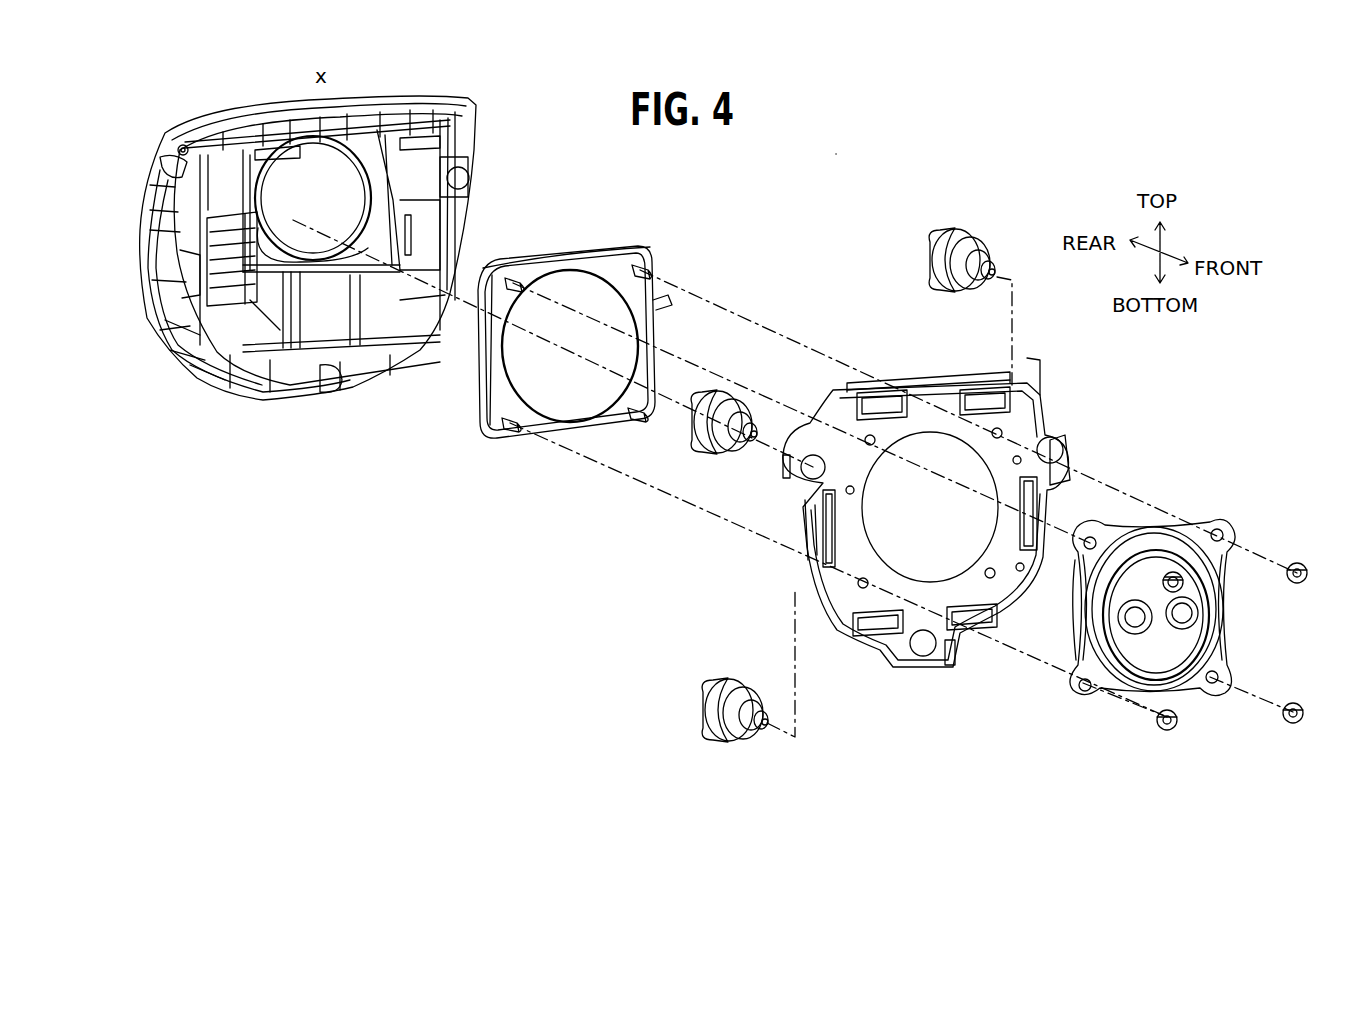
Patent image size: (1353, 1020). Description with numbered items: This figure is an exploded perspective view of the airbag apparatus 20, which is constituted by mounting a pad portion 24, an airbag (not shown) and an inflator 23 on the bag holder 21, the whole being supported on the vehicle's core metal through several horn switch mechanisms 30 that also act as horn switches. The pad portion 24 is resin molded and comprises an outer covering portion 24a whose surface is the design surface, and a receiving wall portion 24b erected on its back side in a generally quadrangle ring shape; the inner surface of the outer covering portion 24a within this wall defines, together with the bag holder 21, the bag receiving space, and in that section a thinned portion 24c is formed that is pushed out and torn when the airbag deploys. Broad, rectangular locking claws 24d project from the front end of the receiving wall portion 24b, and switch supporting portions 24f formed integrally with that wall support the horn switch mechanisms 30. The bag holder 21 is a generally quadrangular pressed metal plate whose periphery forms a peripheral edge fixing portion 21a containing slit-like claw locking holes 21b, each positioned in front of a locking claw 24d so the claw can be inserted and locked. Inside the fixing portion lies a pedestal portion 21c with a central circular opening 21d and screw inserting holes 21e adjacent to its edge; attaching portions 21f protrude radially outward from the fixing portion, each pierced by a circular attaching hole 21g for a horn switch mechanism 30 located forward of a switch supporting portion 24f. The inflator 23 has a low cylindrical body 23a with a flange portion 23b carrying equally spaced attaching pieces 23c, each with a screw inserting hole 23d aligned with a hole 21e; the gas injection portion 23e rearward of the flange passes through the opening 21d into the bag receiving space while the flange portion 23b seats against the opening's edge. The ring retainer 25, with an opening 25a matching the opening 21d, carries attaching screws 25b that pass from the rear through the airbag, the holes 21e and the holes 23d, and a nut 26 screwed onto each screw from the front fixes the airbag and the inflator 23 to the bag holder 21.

The airbag apparatus 20 is at (845, 153).
The bag holder 21 is at (1022, 390).
The peripheral edge fixing portion 21a is at (932, 398).
The claw locking hole 21b is at (878, 395).
The pedestal portion 21c is at (900, 430).
The opening 21d is at (805, 565).
The screw inserting hole 21e is at (928, 470).
The attaching portion 21f is at (780, 487).
The attaching hole 21g is at (808, 445).
The inflator 23 is at (1165, 540).
The body 23a is at (1173, 582).
The flange portion 23b is at (1180, 700).
The attaching piece 23c is at (1090, 555).
The screw inserting hole 23d is at (1108, 548).
The gas injection portion 23e is at (1078, 668).
The pad portion 24 is at (410, 88).
The outer covering portion 24a is at (240, 112).
The receiving wall portion 24b is at (466, 142).
The thinned portion 24c is at (327, 258).
The locking claw 24d is at (322, 150).
The switch supporting portion 24f is at (165, 160).
The ring retainer 25 is at (590, 248).
The opening 25a is at (478, 382).
The attaching screw 25b is at (560, 400).
The nut 26 is at (1167, 708).
The horn switch mechanism 30 is at (982, 214).